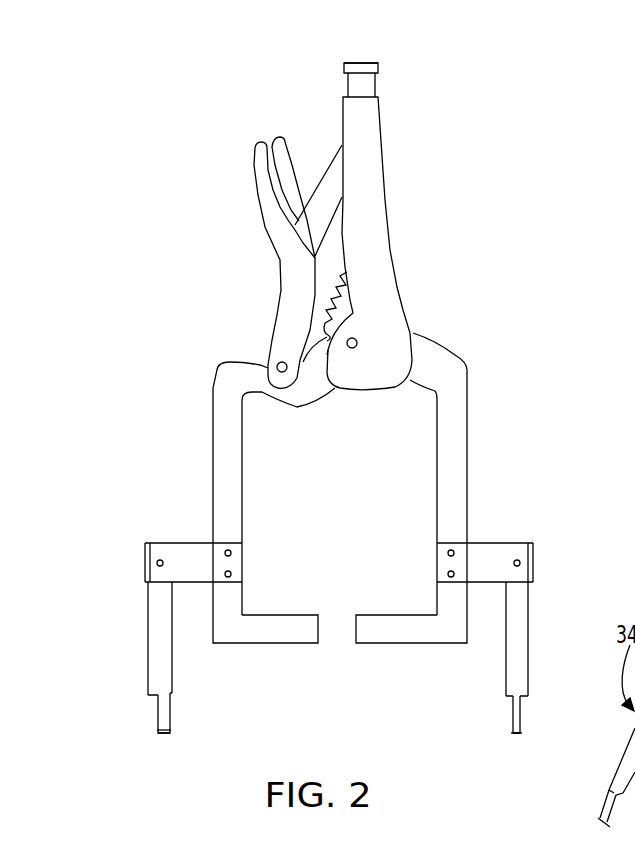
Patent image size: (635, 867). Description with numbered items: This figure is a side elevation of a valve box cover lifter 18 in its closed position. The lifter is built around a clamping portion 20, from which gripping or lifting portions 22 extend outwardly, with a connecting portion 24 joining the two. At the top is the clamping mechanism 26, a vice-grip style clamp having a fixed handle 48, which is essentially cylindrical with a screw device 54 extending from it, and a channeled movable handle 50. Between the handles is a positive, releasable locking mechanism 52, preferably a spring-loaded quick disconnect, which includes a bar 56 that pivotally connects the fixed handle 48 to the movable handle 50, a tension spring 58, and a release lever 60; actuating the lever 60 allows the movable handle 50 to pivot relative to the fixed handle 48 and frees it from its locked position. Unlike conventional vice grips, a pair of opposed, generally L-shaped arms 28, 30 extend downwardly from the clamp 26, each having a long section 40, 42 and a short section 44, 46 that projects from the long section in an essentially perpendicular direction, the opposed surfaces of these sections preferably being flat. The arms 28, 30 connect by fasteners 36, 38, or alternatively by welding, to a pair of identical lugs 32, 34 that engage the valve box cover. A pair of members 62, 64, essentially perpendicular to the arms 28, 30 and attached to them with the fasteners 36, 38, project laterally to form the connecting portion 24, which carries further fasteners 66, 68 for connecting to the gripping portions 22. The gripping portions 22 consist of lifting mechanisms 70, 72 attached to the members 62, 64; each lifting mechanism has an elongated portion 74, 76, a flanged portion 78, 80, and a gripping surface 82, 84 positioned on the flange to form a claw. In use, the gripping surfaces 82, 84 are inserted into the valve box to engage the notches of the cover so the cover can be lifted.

The valve box cover lifter 18 is at (428, 168).
The clamping portion 20 is at (365, 63).
The gripping or lifting portions 22 is at (158, 722).
The connecting portion 24 is at (215, 543).
The clamping mechanism 26 is at (347, 220).
The arm 28 is at (456, 353).
The arm 30 is at (228, 400).
The lug 32 is at (541, 676).
The lug 34 is at (182, 668).
The fastener 36 is at (448, 553).
The fastener 38 is at (232, 553).
The long section 40 is at (448, 449).
The long section 42 is at (232, 449).
The short section 44 is at (400, 635).
The short section 46 is at (287, 637).
The fixed handle 48 is at (363, 135).
The movable handle 50 is at (285, 237).
The releasable locking mechanism 52 is at (330, 158).
The screw device 54 is at (353, 83).
The bar 56 is at (320, 207).
The tension spring 58 is at (348, 308).
The release lever 60 is at (283, 138).
The member 62 is at (500, 552).
The member 64 is at (190, 555).
The fastener 66 is at (520, 563).
The fastener 68 is at (163, 566).
The lifting mechanism 70 is at (526, 697).
The lifting mechanism 72 is at (175, 694).
The elongated portion 74 is at (513, 645).
The elongated portion 76 is at (165, 668).
The flanged portion 78 is at (513, 735).
The flanged portion 80 is at (164, 738).
The gripping surface 82 is at (512, 728).
The gripping surface 84 is at (172, 730).